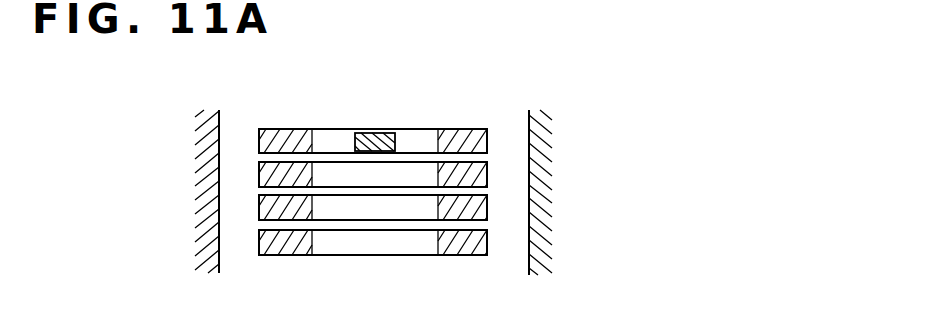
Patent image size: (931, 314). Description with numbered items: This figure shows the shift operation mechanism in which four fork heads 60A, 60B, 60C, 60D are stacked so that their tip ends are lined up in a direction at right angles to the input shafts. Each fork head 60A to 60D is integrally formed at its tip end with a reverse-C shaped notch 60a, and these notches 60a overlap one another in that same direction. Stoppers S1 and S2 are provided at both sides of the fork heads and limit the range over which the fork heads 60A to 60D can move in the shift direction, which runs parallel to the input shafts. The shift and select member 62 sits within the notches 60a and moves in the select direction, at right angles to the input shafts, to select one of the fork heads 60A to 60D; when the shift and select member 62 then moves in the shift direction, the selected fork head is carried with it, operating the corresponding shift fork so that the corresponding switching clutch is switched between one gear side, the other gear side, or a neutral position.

The stopper S1 is at (220, 125).
The stopper S2 is at (527, 122).
The reverse-C shaped notch 60a is at (314, 138).
The shift and select member 62 is at (373, 133).
The fork head 60A is at (448, 129).
The fork head 60B is at (487, 176).
The fork head 60C is at (473, 211).
The fork head 60D is at (450, 256).